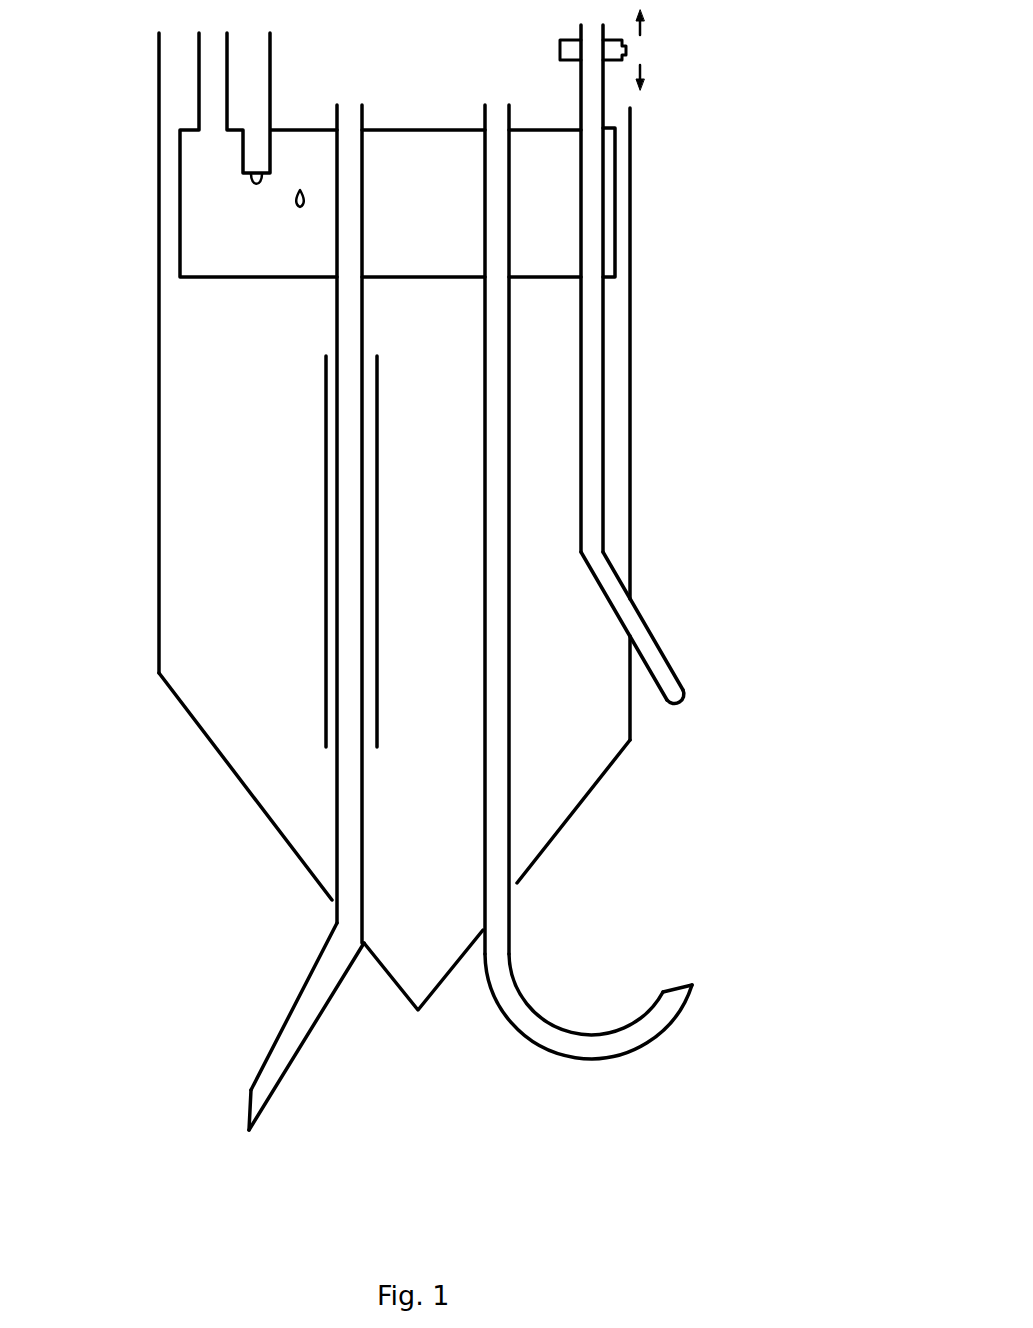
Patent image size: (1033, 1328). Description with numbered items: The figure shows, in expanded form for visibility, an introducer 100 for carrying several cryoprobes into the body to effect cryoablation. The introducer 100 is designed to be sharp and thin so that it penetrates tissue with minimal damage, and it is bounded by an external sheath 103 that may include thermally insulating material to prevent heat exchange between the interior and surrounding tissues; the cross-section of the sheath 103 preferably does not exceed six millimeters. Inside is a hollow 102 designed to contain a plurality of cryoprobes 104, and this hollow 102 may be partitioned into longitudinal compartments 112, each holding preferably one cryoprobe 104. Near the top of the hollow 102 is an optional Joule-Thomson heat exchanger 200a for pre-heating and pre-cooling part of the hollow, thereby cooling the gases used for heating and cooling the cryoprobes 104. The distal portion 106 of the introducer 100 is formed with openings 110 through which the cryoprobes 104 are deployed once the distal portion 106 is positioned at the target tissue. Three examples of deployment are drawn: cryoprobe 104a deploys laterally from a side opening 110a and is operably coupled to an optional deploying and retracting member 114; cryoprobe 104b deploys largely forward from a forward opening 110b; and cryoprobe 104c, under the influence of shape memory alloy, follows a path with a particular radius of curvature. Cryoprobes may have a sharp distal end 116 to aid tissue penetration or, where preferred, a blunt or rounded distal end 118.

The introducer 100 is at (159, 528).
The hollow 102 is at (172, 627).
The external sheath 103 is at (159, 433).
The cryoprobe 104 is at (335, 310).
The cryoprobe 104a is at (655, 658).
The cryoprobe 104b is at (288, 1048).
The cryoprobe 104c is at (582, 1047).
The distal portion 106 is at (612, 763).
The opening 110 is at (333, 905).
The side opening 110a is at (638, 597).
The forward opening 110b is at (338, 917).
The longitudinal compartment 112 is at (326, 724).
The deploying and retracting member 114 is at (633, 50).
The sharp distal end 116 is at (249, 1135).
The blunt or rounded distal end 118 is at (683, 702).
The Joule-Thomson heat exchanger 200a is at (198, 230).